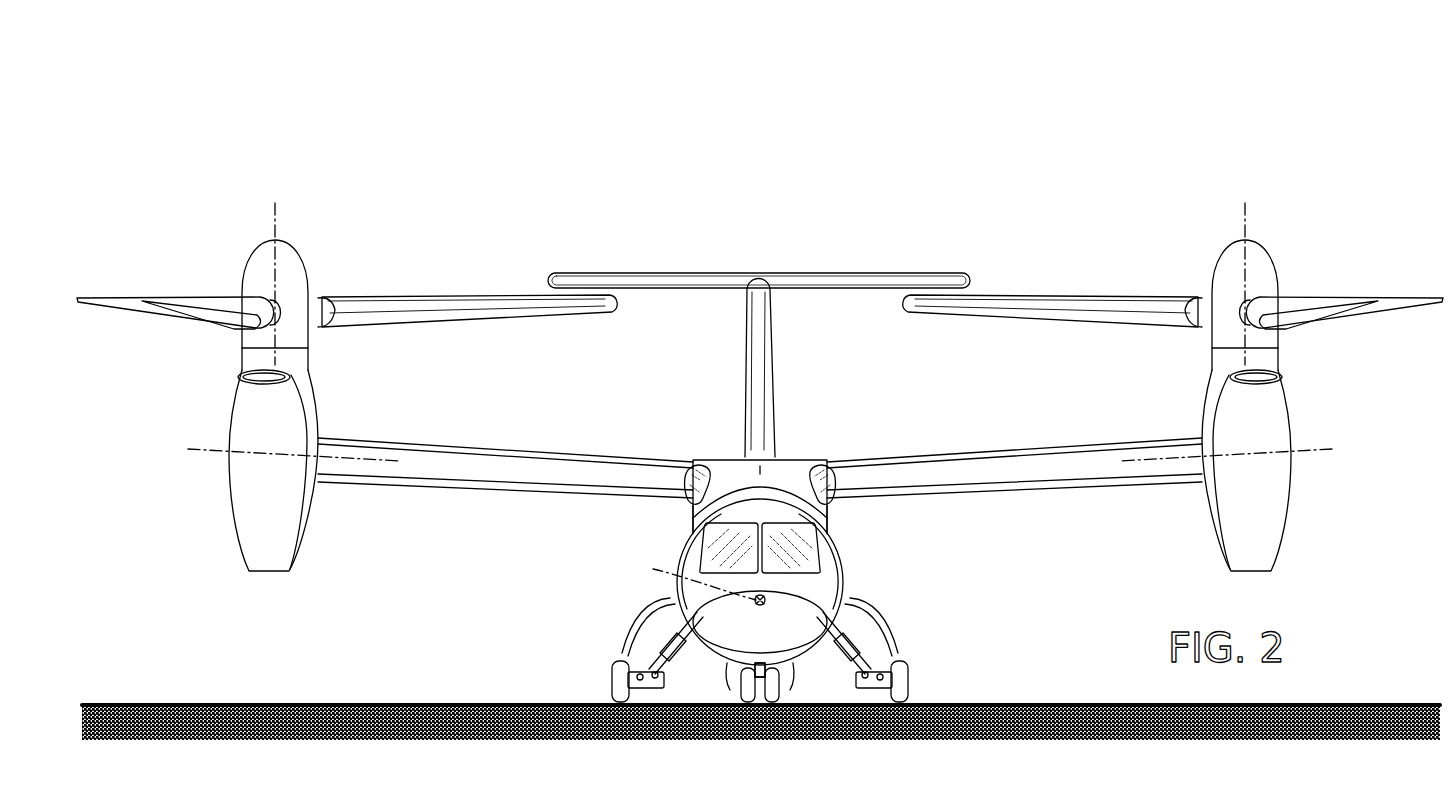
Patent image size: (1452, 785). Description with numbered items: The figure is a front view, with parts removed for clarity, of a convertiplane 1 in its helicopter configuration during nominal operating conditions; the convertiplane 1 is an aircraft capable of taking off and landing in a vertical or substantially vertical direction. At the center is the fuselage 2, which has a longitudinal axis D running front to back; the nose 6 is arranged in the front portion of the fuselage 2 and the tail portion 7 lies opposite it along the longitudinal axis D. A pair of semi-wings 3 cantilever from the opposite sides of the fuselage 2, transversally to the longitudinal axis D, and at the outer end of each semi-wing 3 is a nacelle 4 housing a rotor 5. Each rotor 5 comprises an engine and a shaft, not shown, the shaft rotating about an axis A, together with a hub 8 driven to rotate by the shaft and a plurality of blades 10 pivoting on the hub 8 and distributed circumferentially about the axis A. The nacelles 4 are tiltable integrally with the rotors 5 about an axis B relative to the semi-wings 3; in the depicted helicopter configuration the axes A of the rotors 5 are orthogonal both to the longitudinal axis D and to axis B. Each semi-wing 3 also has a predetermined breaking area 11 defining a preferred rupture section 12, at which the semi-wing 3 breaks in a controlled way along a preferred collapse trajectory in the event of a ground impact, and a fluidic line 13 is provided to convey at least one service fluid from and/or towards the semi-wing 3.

The convertiplane 1 is at (488, 145).
The fuselage 2 is at (771, 545).
The semi-wings 3 is at (528, 470).
The nacelles 4 is at (300, 378).
The rotors 5 is at (760, 302).
The nose 6 is at (768, 617).
The tail portion 7 is at (768, 358).
The hub 8 is at (258, 277).
The blades 10 is at (122, 306).
The predetermined breaking area 11 is at (682, 508).
The preferred rupture section 12 is at (692, 457).
The fluidic line 13 is at (726, 468).
The rotor axis A is at (278, 232).
The tilt axis B is at (203, 455).
The longitudinal axis D is at (699, 580).